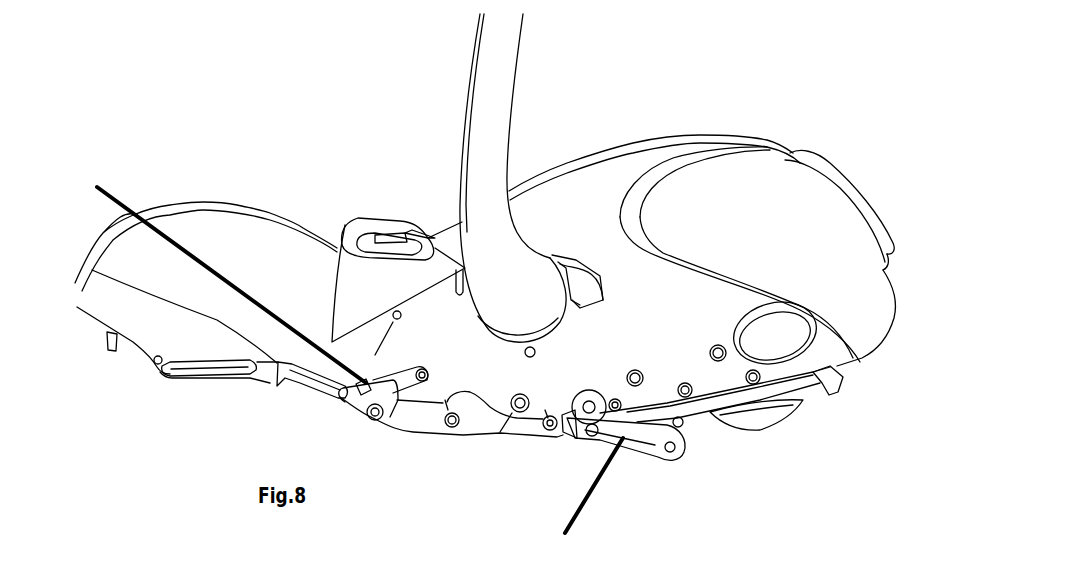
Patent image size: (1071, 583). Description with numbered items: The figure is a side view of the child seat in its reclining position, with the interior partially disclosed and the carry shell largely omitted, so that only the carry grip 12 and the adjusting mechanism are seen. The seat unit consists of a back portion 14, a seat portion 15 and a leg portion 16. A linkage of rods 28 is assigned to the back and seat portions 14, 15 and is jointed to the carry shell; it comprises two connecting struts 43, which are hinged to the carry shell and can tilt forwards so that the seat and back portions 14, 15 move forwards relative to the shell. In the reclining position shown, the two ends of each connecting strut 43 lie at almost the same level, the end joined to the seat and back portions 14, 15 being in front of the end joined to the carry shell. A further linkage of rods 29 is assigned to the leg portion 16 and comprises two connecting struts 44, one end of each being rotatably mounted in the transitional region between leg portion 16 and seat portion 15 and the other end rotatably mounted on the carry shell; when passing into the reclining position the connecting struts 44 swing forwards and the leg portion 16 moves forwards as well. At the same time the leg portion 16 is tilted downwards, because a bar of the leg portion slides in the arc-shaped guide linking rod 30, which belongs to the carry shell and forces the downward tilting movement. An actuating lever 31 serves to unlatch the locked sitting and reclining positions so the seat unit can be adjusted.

The carry grip 12 is at (505, 57).
The back portion 14 is at (703, 418).
The seat portion 15 is at (457, 380).
The leg portion 16 is at (291, 211).
The linkage of rods 28 is at (647, 446).
The linkage of rods 29 is at (389, 388).
The guide linking rod 30 is at (214, 384).
The means (actuating lever) 31 is at (822, 398).
The connecting struts 43 is at (579, 506).
The connecting struts 44 is at (218, 272).